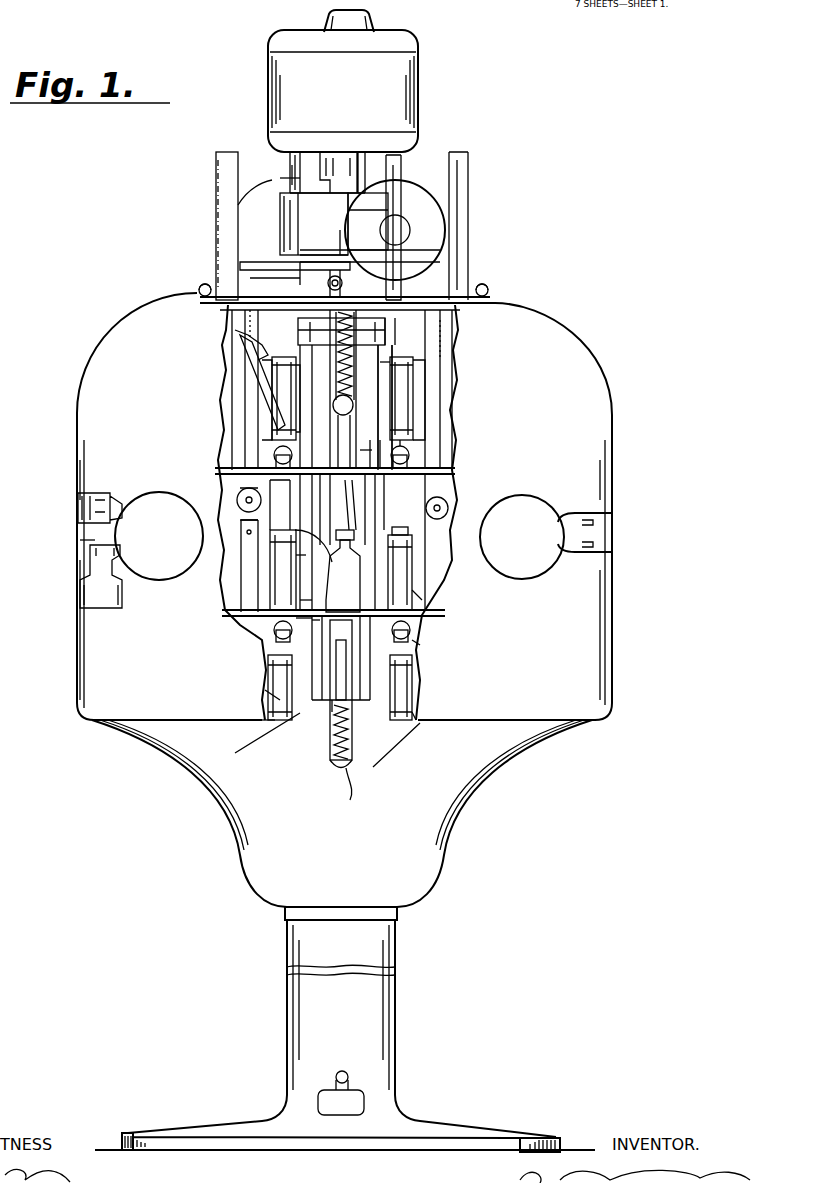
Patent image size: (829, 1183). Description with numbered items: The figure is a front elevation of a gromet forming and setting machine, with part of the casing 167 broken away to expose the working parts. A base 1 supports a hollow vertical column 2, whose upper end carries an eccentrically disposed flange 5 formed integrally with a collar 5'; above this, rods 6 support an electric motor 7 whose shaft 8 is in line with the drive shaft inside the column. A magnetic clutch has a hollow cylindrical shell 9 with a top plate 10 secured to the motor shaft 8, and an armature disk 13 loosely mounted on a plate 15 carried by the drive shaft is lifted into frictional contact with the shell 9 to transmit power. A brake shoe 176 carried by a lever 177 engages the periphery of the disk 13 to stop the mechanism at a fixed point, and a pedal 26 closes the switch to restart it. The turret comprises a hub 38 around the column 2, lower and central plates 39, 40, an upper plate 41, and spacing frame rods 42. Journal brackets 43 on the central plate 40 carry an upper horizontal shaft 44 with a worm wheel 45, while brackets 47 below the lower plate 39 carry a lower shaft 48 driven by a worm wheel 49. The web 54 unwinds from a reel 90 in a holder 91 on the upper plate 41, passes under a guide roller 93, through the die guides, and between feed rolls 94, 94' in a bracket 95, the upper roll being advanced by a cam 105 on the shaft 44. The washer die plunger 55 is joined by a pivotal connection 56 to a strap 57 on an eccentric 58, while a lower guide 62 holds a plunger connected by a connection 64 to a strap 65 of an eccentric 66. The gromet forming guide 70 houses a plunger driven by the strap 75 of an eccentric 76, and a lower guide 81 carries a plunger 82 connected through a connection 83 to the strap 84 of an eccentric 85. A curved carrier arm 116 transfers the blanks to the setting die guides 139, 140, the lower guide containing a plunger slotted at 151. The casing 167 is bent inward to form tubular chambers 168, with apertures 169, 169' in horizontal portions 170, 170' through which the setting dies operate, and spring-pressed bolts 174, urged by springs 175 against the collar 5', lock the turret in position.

The base 1 is at (360, 1055).
The vertical column 2 is at (380, 362).
The flange 5 is at (229, 279).
The collar 5' is at (286, 286).
The rods 6 is at (290, 180).
The electric motor 7 is at (343, 81).
The motor shaft 8 is at (345, 190).
The hollow cylindrical shell 9 is at (290, 212).
The top plate 10 is at (292, 170).
The armature disk 13 is at (290, 252).
The plate 15 is at (300, 265).
The pedal 26 is at (330, 1102).
The sleeve or hub 38 is at (300, 620).
The lower horizontal plate 39 is at (300, 605).
The central horizontal plate 40 is at (215, 470).
The upper horizontal plate 41 is at (262, 330).
The spacing frame rods 42 is at (275, 385).
The journal brackets 43 is at (275, 370).
The upper horizontal shaft 44 is at (322, 382).
The upper worm wheel 45 is at (372, 341).
The lower brackets 47 is at (300, 745).
The lower horizontal shaft 48 is at (340, 735).
The lower worm wheel 49 is at (354, 792).
The web or strip 54 is at (436, 280).
The die plunger 55 is at (410, 468).
The adjustable pivotal connection 56 is at (395, 456).
The strap 57 is at (410, 406).
The eccentric 58 is at (392, 396).
The cylindrical guide 62 is at (420, 602).
The adjustable pivotal connection 64 is at (418, 642).
The strap 65 is at (400, 680).
The eccentric 66 is at (412, 715).
The cylindrical guide 70 is at (262, 490).
The strap 75 is at (290, 412).
The eccentric 76 is at (270, 395).
The cylindrical guide 81 is at (300, 575).
The plunger 82 is at (318, 626).
The adjustable pivotal connection 83 is at (276, 690).
The strap 84 is at (275, 712).
The eccentric 85 is at (282, 705).
The coil or reel 90 is at (258, 203).
The holder 91 is at (222, 165).
The guide roller 93 is at (448, 508).
The upper feed roll 94 is at (213, 496).
The lower feed roll 94' is at (213, 565).
The bracket 95 is at (235, 560).
The cam 105 is at (265, 358).
The curved carrier arm 116 is at (268, 570).
The upper setting die guide 139 is at (395, 470).
The lower setting die guide 140 is at (328, 546).
The slot 151 is at (332, 712).
The casing 167 is at (106, 706).
The tubular chambers 168 is at (146, 503).
The aperture 169 is at (52, 528).
The aperture 169' is at (47, 564).
The inwardly turned horizontal portion 170 is at (333, 507).
The inwardly turned horizontal portion 170' is at (340, 586).
The bolts 174 is at (200, 298).
The springs 175 is at (240, 310).
The brake shoe 176 is at (332, 252).
The brake lever 177 is at (383, 256).